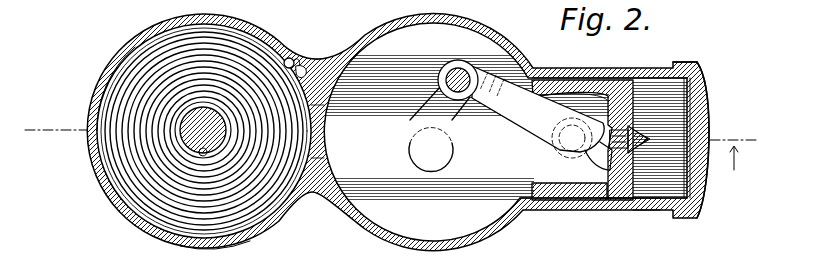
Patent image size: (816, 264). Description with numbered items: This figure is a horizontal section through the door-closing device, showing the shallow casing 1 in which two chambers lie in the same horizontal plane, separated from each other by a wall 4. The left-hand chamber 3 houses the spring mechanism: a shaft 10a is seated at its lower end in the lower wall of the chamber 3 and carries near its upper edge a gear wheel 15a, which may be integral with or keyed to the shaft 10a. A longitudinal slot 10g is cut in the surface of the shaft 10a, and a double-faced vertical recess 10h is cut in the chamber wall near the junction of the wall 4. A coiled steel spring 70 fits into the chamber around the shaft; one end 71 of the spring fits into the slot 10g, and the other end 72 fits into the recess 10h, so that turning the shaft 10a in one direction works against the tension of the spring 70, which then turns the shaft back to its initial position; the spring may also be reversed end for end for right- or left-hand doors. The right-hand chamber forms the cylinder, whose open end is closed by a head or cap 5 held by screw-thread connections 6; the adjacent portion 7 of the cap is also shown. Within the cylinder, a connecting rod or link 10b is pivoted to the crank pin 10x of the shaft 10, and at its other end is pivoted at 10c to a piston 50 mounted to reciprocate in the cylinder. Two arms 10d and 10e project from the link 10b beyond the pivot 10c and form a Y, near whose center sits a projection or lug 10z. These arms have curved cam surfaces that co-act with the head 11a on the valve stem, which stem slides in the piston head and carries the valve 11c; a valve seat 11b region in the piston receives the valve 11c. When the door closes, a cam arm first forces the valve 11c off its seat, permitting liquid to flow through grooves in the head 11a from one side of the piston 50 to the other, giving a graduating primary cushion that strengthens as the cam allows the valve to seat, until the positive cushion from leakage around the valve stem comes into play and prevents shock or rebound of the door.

The casing 1 is at (367, 15).
The chamber 3 is at (110, 64).
The wall 4 is at (311, 197).
The head or cap 5 is at (707, 96).
The screw-thread connections 6 is at (676, 68).
The cap wall 7 is at (699, 73).
The shaft 10 is at (425, 142).
The shaft 10a is at (192, 128).
The connecting rod or link 10b is at (512, 112).
The pivot 10c is at (558, 158).
The arm 10d is at (542, 210).
The arm 10e is at (632, 74).
The longitudinal slot 10g is at (198, 158).
The double-faced vertical recess 10h is at (303, 65).
The crank pin 10x is at (474, 66).
The projection or lug 10z is at (592, 198).
The head 11a is at (606, 212).
The valve seat 11b is at (637, 213).
The valve 11c is at (645, 142).
The gear wheel 15a is at (231, 252).
The piston 50 is at (561, 80).
The coiled steel spring 70 is at (100, 167).
The spring end 71 is at (200, 160).
The spring end 72 is at (285, 56).